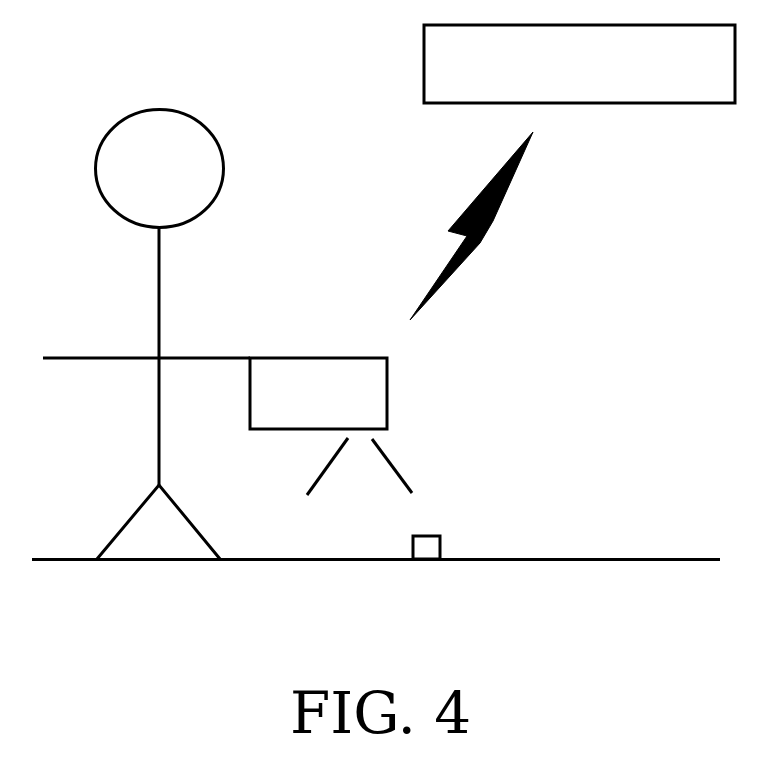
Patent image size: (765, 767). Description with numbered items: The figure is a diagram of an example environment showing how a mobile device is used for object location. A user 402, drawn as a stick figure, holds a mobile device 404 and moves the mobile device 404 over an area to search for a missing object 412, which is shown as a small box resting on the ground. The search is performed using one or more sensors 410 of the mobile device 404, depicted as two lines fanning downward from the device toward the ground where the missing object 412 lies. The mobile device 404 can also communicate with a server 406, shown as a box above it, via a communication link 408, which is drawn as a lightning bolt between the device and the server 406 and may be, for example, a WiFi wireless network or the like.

The user 402 is at (88, 108).
The mobile device 404 is at (318, 393).
The server 406 is at (579, 64).
The communication link 408 is at (445, 202).
The sensors 410 is at (389, 441).
The missing object 412 is at (465, 511).